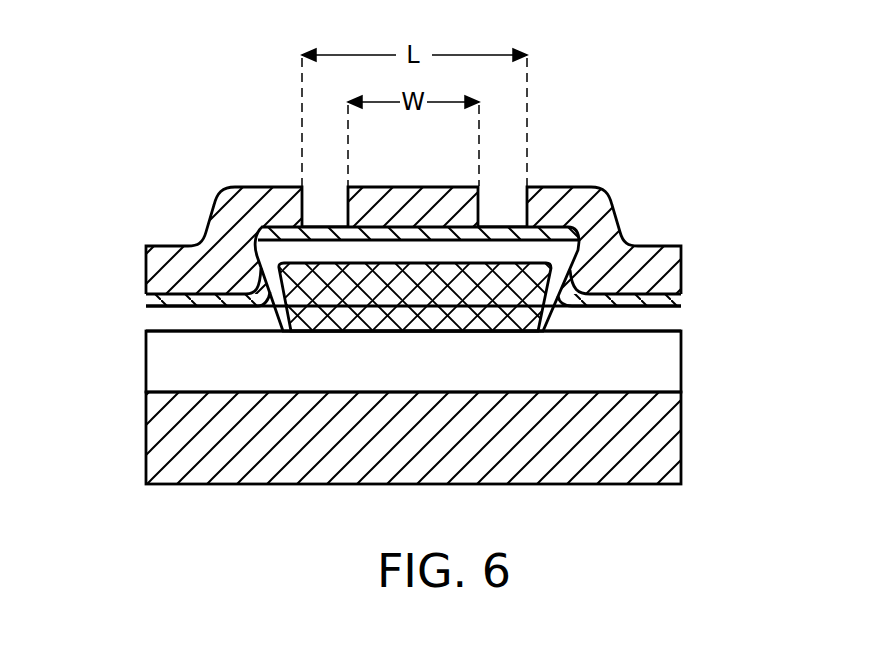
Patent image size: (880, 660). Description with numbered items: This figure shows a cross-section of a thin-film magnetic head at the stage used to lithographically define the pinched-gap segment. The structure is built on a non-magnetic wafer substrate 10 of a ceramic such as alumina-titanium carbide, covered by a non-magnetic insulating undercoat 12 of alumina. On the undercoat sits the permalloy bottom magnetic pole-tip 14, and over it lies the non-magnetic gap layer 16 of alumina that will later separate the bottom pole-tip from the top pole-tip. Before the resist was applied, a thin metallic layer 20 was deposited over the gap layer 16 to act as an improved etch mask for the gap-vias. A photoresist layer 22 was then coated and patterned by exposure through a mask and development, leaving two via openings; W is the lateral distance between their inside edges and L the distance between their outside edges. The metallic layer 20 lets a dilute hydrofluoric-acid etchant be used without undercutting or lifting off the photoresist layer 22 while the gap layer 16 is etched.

The wafer substrate 10 is at (145, 428).
The undercoat 12 is at (157, 378).
The bottom magnetic pole-tip 14 is at (485, 288).
The gap layer 16 is at (152, 325).
The metallic layer 20 is at (150, 297).
The photoresist layer 22 is at (187, 253).